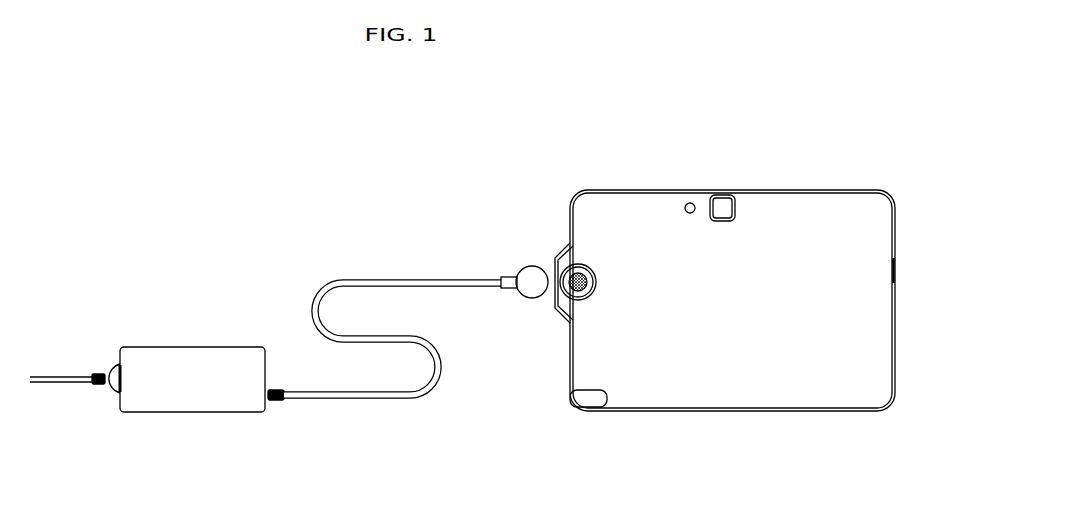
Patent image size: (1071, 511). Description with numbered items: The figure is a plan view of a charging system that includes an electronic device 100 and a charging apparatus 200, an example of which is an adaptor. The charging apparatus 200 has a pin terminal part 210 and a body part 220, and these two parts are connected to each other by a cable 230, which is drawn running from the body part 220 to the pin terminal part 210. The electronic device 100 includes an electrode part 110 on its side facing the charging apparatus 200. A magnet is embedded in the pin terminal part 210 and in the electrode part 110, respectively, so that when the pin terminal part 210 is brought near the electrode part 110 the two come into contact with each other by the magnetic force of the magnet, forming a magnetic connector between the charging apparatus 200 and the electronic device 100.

The electronic device 100 is at (567, 190).
The electrode part 110 is at (567, 306).
The charging apparatus 200 is at (175, 273).
The pin terminal part 210 is at (528, 292).
The body part 220 is at (178, 400).
The cable 230 is at (403, 395).